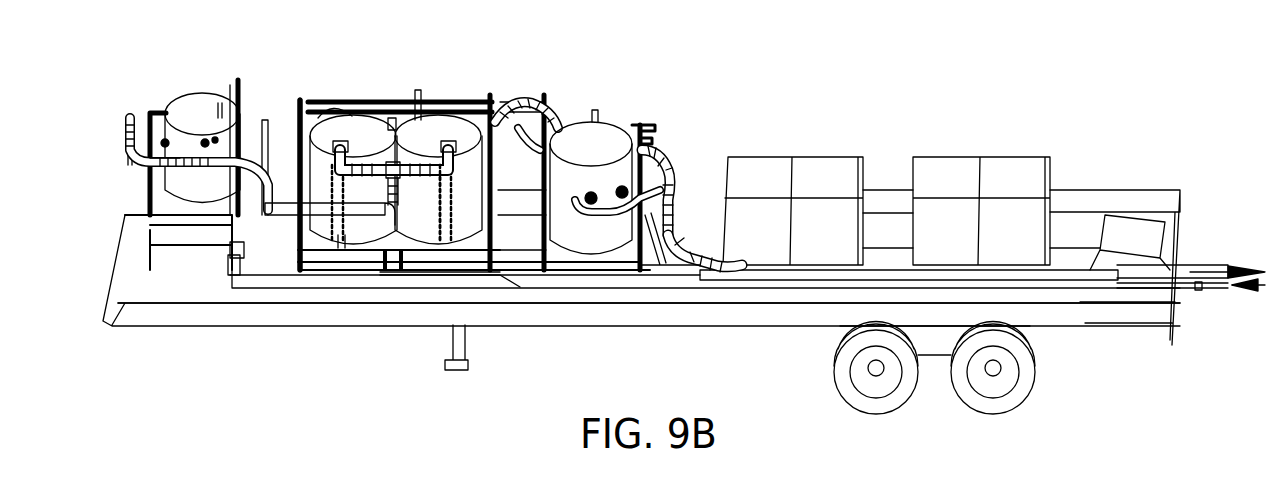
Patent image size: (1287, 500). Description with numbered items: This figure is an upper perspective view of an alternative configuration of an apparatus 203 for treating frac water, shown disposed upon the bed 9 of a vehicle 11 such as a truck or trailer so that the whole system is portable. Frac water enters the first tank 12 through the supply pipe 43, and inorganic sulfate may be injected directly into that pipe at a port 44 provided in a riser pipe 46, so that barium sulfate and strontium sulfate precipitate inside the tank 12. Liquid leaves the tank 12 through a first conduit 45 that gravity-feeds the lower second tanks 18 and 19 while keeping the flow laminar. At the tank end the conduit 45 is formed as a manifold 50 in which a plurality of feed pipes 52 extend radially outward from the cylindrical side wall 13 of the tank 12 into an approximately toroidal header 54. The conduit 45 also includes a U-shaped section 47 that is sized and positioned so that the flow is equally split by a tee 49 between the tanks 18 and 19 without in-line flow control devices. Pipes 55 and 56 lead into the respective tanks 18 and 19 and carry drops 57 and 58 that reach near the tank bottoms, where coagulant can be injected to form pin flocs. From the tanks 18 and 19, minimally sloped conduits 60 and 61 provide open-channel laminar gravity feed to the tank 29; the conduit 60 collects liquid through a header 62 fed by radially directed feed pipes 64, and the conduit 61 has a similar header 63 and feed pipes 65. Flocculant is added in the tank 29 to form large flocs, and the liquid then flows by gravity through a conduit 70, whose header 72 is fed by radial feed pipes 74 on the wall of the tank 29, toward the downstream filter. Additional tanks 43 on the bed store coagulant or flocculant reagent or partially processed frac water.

The bed 9 is at (175, 300).
The vehicle 11 is at (348, 326).
The tank 12 is at (184, 100).
The side wall 13 is at (145, 153).
The tank 18 is at (362, 122).
The tank 19 is at (437, 122).
The tank 29 is at (609, 120).
The tanks / pipe 43 is at (927, 155).
The port 44 is at (246, 258).
The first conduit 45 is at (270, 160).
The riser pipe 46 is at (230, 270).
The U-shaped section 47 is at (320, 216).
The tee 49 is at (394, 165).
The manifold 50 is at (128, 172).
The feed pipes 52 is at (162, 140).
The header 54 is at (165, 171).
The pipe 55 is at (347, 143).
The pipe 56 is at (447, 150).
The drop 57 is at (342, 245).
The drop 58 is at (438, 218).
The conduit 60 is at (528, 100).
The conduit 61 is at (522, 138).
The header 62 is at (313, 110).
The header 63 is at (408, 120).
The feed pipes 64 is at (354, 116).
The feed pipes 65 is at (392, 118).
The conduit 70 is at (680, 260).
The header 72 is at (672, 165).
The feed pipes 74 is at (575, 200).
The apparatus 203 is at (742, 63).